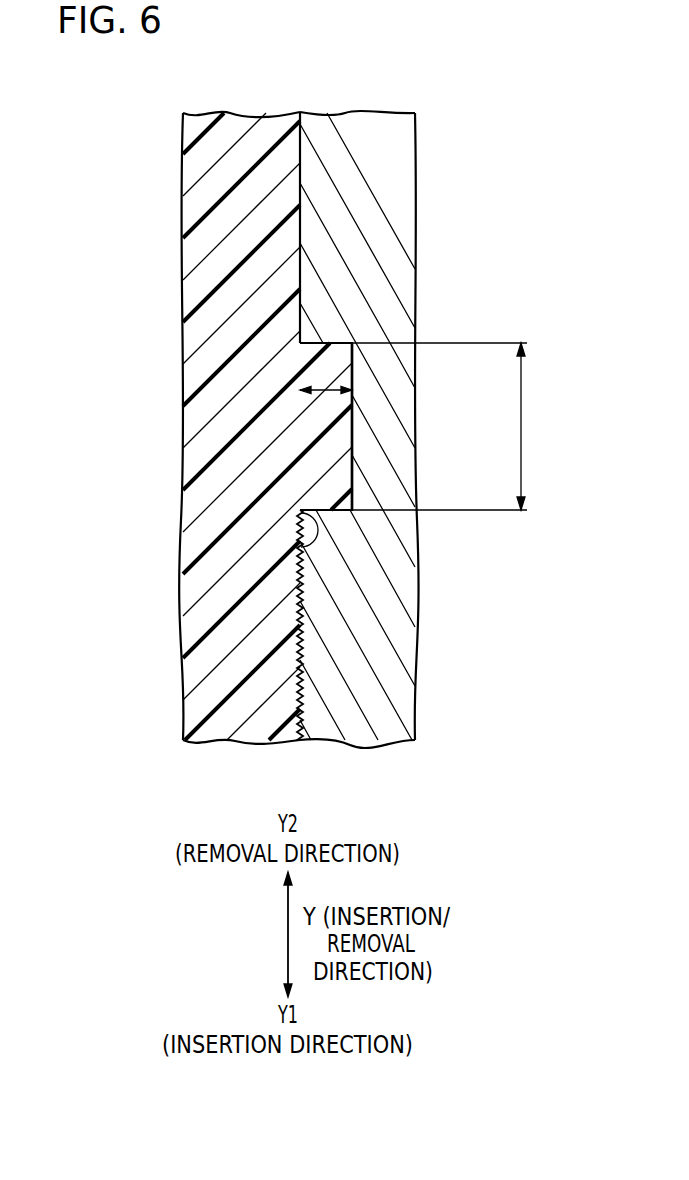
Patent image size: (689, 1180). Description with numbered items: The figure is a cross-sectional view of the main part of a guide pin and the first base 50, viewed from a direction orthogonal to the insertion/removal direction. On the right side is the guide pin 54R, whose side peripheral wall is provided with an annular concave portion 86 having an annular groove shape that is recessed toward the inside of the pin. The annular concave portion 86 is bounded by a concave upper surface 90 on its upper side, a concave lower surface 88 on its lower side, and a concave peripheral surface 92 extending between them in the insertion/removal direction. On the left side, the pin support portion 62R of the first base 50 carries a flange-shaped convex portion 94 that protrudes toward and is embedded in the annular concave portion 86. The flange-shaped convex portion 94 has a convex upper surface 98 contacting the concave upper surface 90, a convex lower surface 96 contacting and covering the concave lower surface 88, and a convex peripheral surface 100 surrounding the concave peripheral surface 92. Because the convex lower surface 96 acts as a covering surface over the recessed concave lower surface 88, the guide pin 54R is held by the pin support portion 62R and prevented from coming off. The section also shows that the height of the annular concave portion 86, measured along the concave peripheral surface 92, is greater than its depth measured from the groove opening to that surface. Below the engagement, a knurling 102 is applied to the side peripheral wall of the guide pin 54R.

The first base 50 is at (295, 429).
The pin support portion 62R is at (197, 256).
The guide pin 54R is at (403, 232).
The annular concave portion 86 is at (350, 478).
The concave lower surface 88 is at (310, 507).
The concave upper surface 90 is at (312, 354).
The concave peripheral surface 92 is at (313, 422).
The flange-shaped convex portion 94 is at (336, 438).
The convex lower surface 96 is at (300, 546).
The convex upper surface 98 is at (343, 341).
The convex peripheral surface 100 is at (354, 469).
The knurling 102 is at (300, 652).